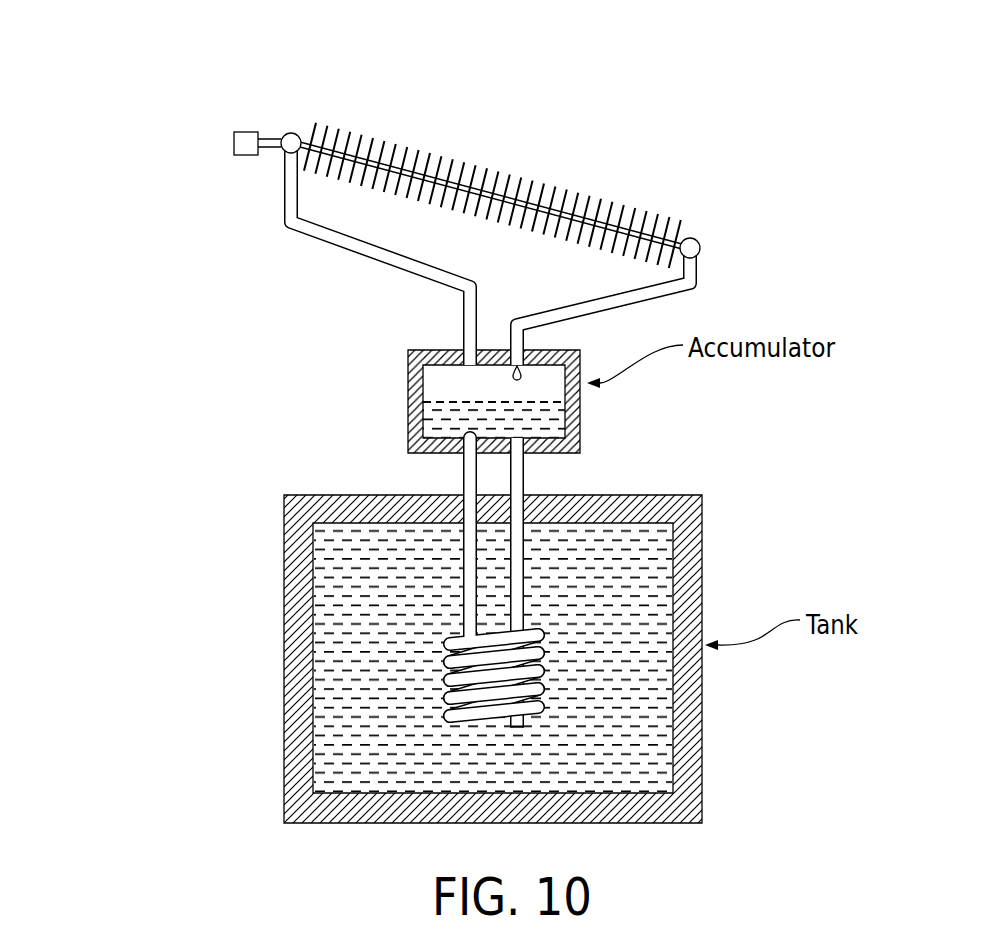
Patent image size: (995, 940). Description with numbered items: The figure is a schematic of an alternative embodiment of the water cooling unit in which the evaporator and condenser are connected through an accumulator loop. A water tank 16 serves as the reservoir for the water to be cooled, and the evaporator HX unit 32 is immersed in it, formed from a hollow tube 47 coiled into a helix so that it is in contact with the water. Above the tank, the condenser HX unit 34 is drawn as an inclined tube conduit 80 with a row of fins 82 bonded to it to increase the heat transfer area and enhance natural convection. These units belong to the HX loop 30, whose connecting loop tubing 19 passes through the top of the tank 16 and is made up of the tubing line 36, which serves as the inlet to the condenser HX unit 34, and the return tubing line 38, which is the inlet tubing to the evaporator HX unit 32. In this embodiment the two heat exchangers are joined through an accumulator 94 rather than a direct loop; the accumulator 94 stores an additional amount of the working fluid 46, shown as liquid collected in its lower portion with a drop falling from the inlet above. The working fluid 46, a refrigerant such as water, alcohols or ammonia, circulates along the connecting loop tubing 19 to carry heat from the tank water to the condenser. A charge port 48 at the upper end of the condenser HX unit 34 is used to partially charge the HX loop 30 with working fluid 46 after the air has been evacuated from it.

The water tank 16 is at (686, 756).
The connecting loop tubing 19 is at (490, 561).
The HX loop 30 is at (264, 329).
The evaporator HX unit 32 is at (561, 633).
The condenser HX unit 34 is at (516, 165).
The tubing line 36 is at (462, 473).
The return tubing line 38 is at (525, 470).
The working fluid 46 is at (440, 423).
The hollow tube 47 is at (537, 705).
The charge port 48 is at (243, 132).
The tube conduits 80 is at (413, 163).
The fins 82 is at (533, 183).
The accumulator 94 is at (423, 350).